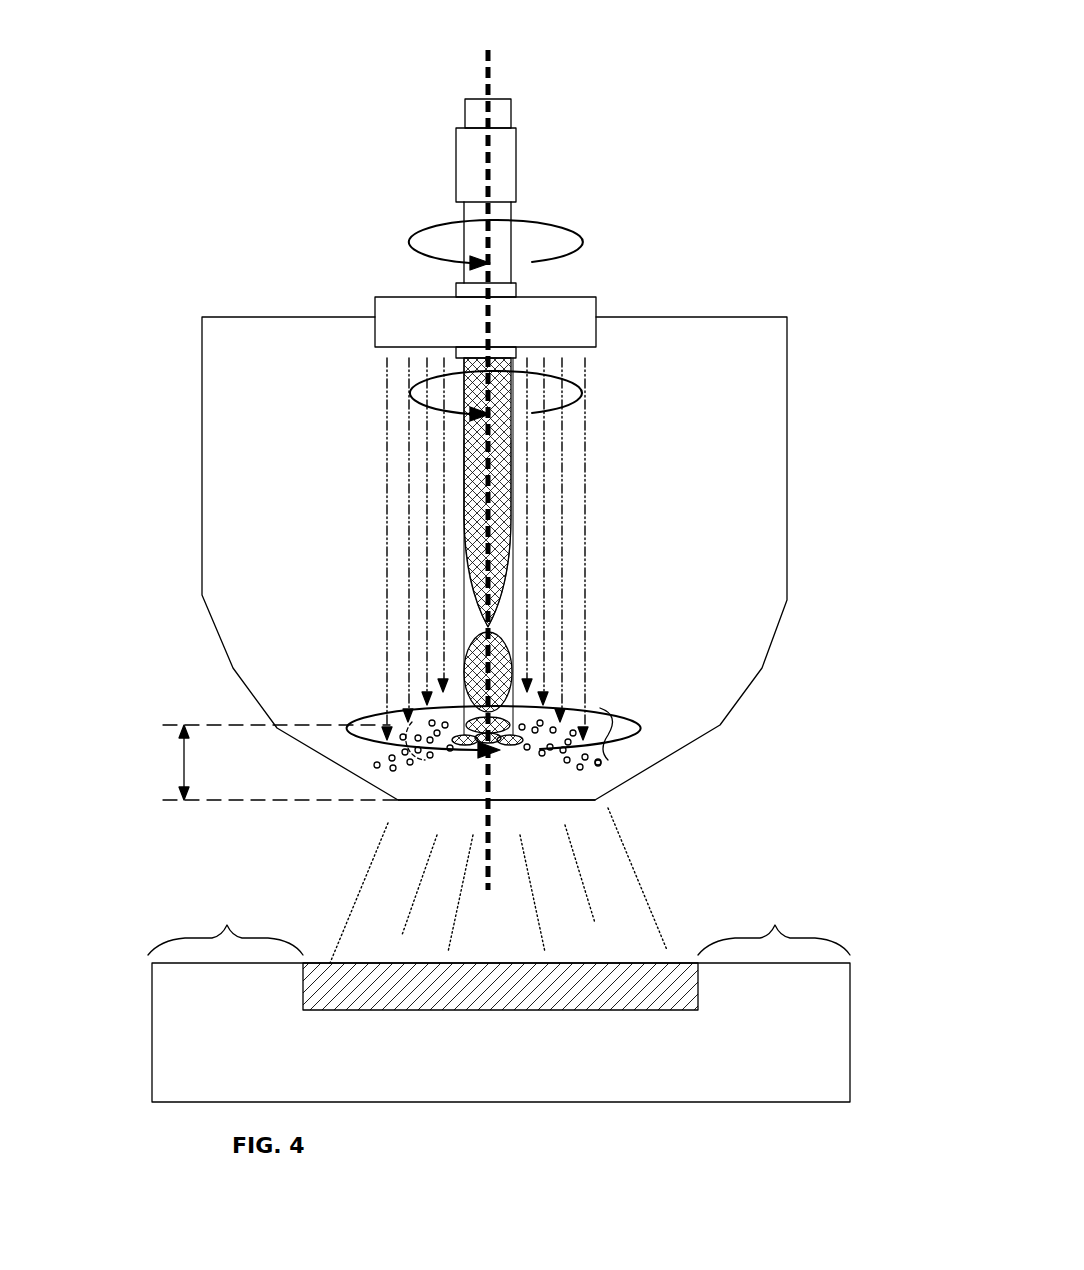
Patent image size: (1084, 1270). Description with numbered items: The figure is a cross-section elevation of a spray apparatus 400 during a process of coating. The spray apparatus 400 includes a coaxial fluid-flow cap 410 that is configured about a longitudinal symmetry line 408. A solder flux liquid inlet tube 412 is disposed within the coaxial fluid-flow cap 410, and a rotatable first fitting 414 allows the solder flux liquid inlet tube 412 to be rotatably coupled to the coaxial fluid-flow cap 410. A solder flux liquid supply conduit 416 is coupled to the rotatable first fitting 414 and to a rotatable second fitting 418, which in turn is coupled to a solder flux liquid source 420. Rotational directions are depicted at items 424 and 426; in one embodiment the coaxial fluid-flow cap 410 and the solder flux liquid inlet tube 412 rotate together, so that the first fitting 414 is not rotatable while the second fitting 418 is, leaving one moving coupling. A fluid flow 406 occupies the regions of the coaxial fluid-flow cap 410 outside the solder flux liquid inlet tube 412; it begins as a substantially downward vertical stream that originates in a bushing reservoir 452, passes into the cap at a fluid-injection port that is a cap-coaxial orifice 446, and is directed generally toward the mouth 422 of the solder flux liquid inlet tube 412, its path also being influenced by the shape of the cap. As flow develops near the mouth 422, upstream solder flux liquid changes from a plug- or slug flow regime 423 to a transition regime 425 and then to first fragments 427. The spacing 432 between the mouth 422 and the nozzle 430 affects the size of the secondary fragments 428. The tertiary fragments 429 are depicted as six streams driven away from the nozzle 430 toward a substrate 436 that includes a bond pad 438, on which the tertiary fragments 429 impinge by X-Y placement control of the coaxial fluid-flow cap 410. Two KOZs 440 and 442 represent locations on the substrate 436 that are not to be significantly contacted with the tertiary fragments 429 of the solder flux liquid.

The spray apparatus 400 is at (810, 128).
The longitudinal symmetry line 408 is at (487, 72).
The solder flux liquid source 420 is at (510, 118).
The rotatable second fitting 418 is at (462, 185).
The solder flux liquid supply conduit 416 is at (510, 250).
The rotatable first fitting 414 is at (507, 293).
The bushing reservoir 452 is at (378, 312).
The cap-coaxial orifice 446 is at (567, 347).
The coaxial fluid-flow cap 410 is at (787, 548).
The mouth 422 is at (400, 232).
The rotational direction 424 is at (403, 393).
The fluid flow 406 is at (585, 517).
The solder flux liquid inlet tube 412 is at (465, 520).
The plug- or slug flow regime 423 is at (480, 537).
The transition regime 425 is at (480, 660).
The first fragments 427 is at (517, 742).
The rotational direction 426 is at (362, 720).
The secondary fragments 428 is at (638, 725).
The spacing 432 is at (180, 757).
The nozzle 430 is at (580, 803).
The tertiary fragments 429 is at (633, 882).
The substrate 436 is at (198, 1020).
The bond pad 438 is at (392, 963).
The KOZ 440 is at (225, 926).
The KOZ 442 is at (774, 926).